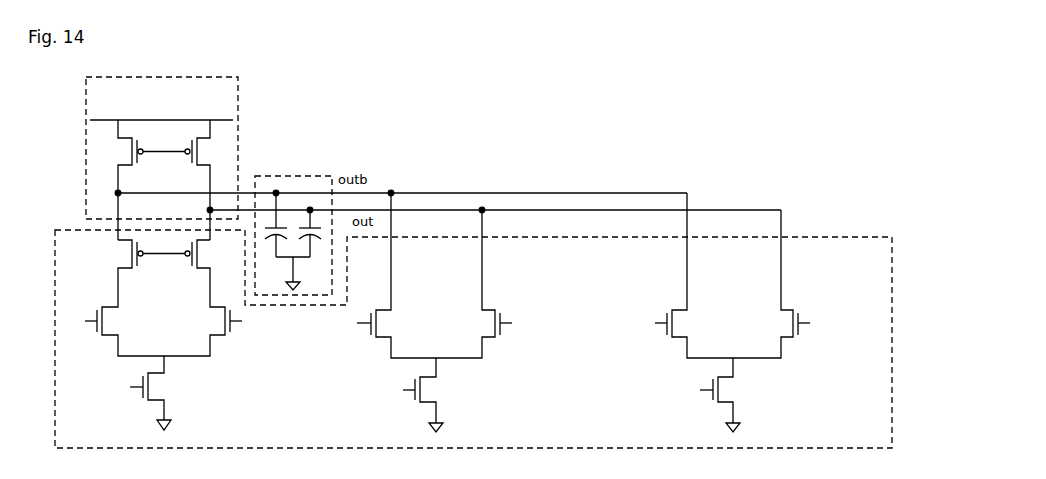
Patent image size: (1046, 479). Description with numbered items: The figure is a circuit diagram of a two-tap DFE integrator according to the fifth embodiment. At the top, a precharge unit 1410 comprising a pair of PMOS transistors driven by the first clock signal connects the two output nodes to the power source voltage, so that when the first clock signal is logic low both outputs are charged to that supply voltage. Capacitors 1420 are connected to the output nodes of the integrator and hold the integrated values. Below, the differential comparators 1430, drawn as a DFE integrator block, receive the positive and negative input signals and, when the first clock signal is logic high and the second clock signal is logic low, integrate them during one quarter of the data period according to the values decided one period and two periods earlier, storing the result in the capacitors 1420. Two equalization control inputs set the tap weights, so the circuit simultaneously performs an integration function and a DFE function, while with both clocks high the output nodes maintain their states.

The precharge unit 1410 is at (238, 119).
The capacitors 1420 is at (300, 175).
The differential comparators 1430 is at (797, 237).